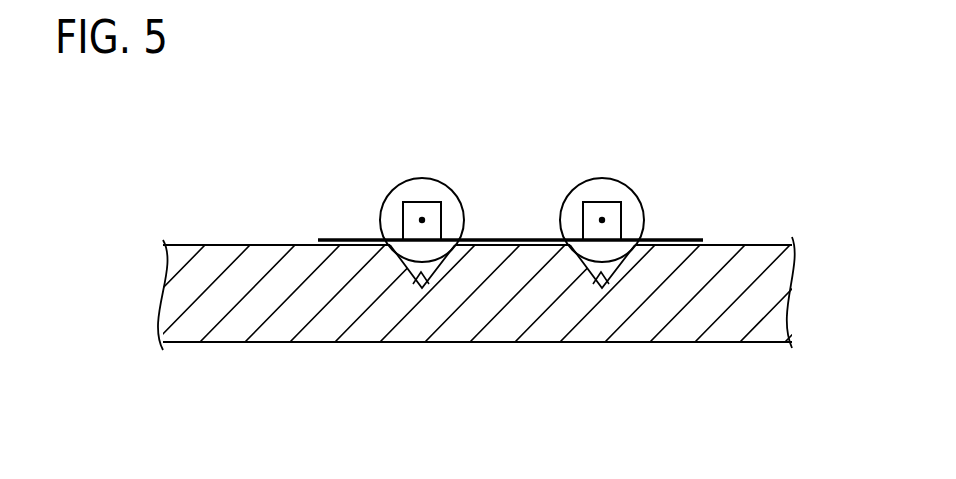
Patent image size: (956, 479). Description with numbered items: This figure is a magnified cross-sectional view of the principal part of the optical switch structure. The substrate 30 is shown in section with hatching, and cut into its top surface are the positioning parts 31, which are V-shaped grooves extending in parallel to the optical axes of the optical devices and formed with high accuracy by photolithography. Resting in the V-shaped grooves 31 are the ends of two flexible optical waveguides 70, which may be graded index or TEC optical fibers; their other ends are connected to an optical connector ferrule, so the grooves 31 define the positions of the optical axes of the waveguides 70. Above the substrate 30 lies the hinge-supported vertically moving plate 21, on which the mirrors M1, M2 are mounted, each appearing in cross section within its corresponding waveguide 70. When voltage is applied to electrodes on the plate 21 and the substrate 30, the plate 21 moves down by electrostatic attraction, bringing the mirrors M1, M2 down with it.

The flexible optical waveguide 70 is at (457, 197).
The mirror M1 is at (598, 203).
The mirror M2 is at (418, 203).
The vertically moving plate 21 is at (688, 238).
The substrate 30 is at (750, 255).
The positioning part 31 is at (422, 291).